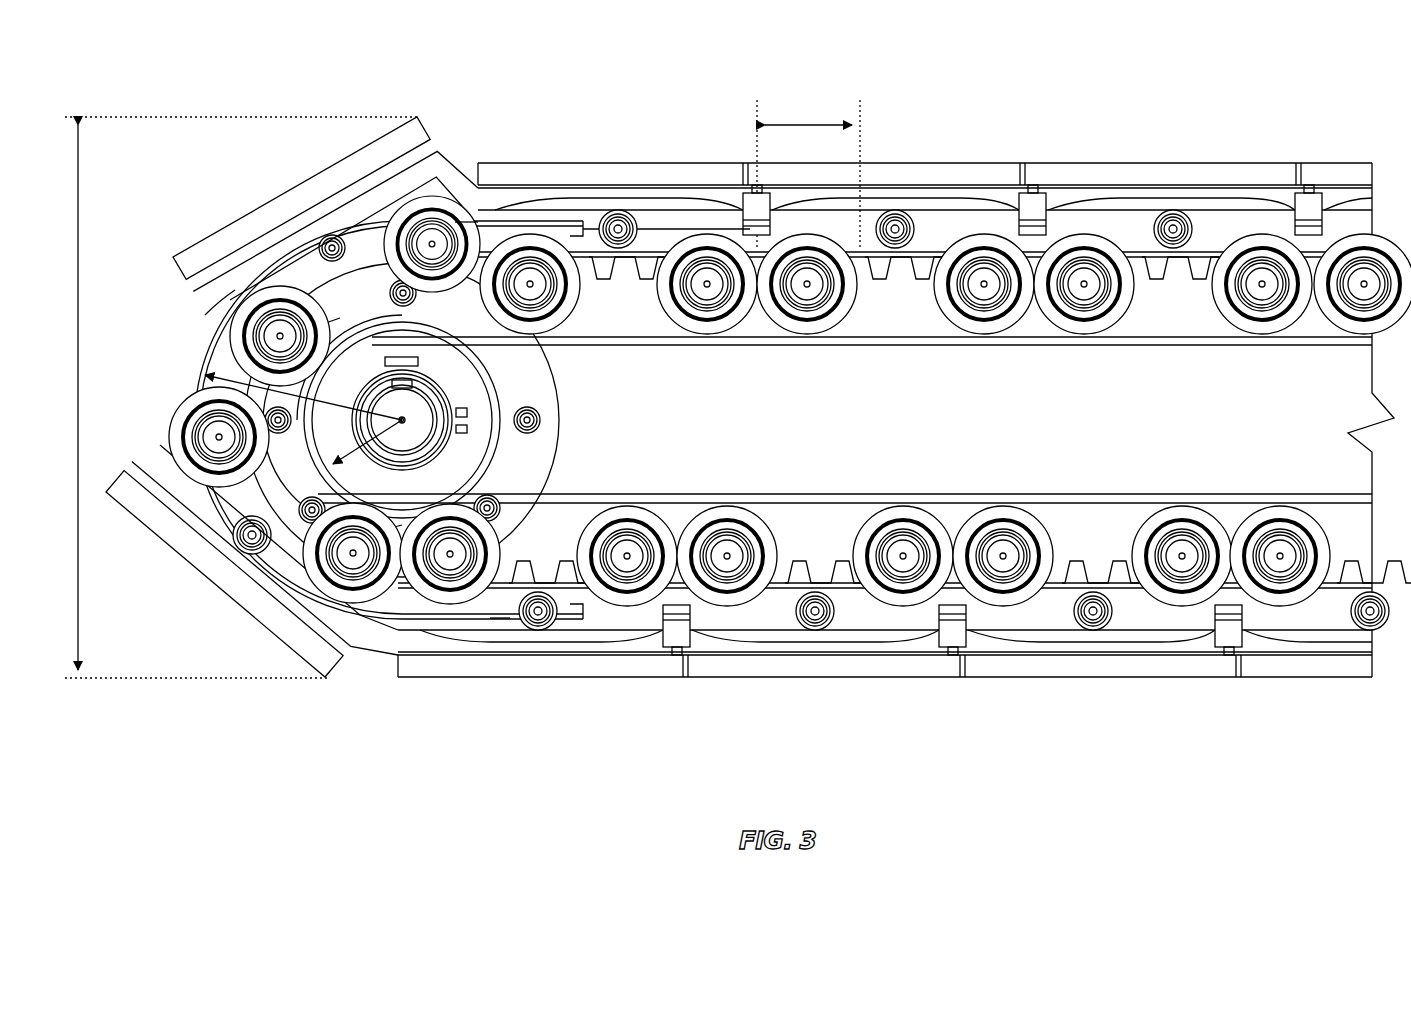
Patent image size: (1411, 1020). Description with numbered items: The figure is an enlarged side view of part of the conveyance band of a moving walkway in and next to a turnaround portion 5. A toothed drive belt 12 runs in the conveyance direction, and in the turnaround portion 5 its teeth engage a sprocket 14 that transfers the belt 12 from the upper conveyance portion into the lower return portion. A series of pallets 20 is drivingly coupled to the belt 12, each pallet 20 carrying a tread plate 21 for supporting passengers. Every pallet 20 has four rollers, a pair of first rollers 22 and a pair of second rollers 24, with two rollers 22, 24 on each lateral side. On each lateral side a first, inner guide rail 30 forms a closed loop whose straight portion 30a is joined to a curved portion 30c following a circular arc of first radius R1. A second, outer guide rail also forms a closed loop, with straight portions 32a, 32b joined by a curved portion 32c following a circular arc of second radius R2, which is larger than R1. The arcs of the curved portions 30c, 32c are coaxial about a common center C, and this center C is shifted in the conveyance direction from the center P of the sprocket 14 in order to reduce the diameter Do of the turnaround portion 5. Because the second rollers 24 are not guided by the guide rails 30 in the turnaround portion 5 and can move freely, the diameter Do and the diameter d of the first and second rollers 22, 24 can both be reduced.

The turnaround portion 5 is at (150, 80).
The drive belt 12 is at (1165, 305).
The sprocket 14 is at (572, 428).
The pallet 20 is at (357, 116).
The tread plate 21 is at (332, 178).
The first roller 22 is at (235, 352).
The second roller 24 is at (446, 164).
The first guide rail 30 is at (905, 345).
The straight portion 30a is at (722, 335).
The curved portion 30c is at (380, 335).
The straight portion 32a is at (463, 228).
The straight portion 32b is at (500, 617).
The curved portion 32c is at (215, 322).
The common center C is at (404, 420).
The center of the sprocket P is at (405, 430).
The first radius R1 is at (367, 453).
The second radius R2 is at (303, 384).
The diameter of the rollers d is at (808, 172).
The diameter of the turnaround portion Do is at (229, 397).